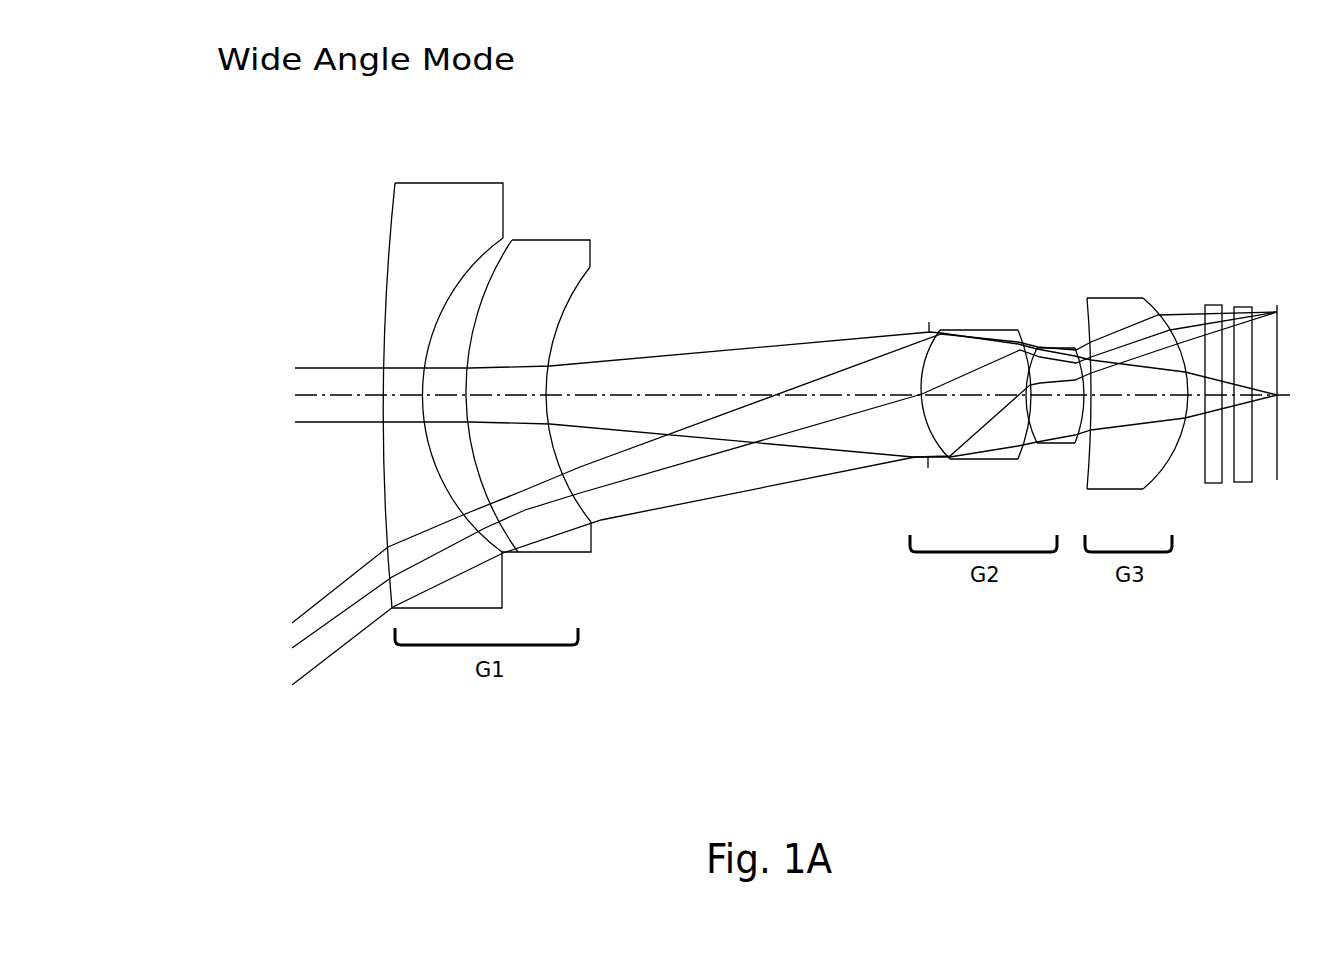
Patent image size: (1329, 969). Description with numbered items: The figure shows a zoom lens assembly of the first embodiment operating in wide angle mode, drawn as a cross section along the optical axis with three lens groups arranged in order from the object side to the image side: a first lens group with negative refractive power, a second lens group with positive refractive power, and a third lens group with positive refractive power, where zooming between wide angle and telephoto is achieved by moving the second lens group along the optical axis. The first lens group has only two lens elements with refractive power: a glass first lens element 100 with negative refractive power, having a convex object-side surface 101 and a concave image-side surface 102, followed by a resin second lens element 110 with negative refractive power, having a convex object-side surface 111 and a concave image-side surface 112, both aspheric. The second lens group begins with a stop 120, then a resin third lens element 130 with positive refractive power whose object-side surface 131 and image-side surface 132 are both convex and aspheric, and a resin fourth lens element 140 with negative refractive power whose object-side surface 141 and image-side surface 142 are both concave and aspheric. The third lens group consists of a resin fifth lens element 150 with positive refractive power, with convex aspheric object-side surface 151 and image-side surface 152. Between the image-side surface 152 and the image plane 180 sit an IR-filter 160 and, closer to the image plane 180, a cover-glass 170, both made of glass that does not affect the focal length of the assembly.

The first lens element 100 is at (393, 374).
The object-side surface of the first lens element 101 is at (378, 431).
The image-side surface of the first lens element 102 is at (419, 436).
The second lens element 110 is at (565, 379).
The object-side surface of the second lens element 111 is at (477, 436).
The image-side surface of the second lens element 112 is at (553, 436).
The stop 120 is at (927, 322).
The third lens element 130 is at (949, 385).
The object-side surface of the third lens element 131 is at (922, 406).
The image-side surface of the third lens element 132 is at (1029, 405).
The fourth lens element 140 is at (1041, 399).
The object-side surface of the fourth lens element 141 is at (1047, 413).
The image-side surface of the fourth lens element 142 is at (1067, 413).
The fifth lens element 150 is at (1149, 381).
The object-side surface of the fifth lens element 151 is at (1094, 413).
The image-side surface of the fifth lens element 152 is at (1187, 431).
The IR-filter 160 is at (1215, 349).
The cover-glass 170 is at (1242, 345).
The image plane 180 is at (1275, 314).